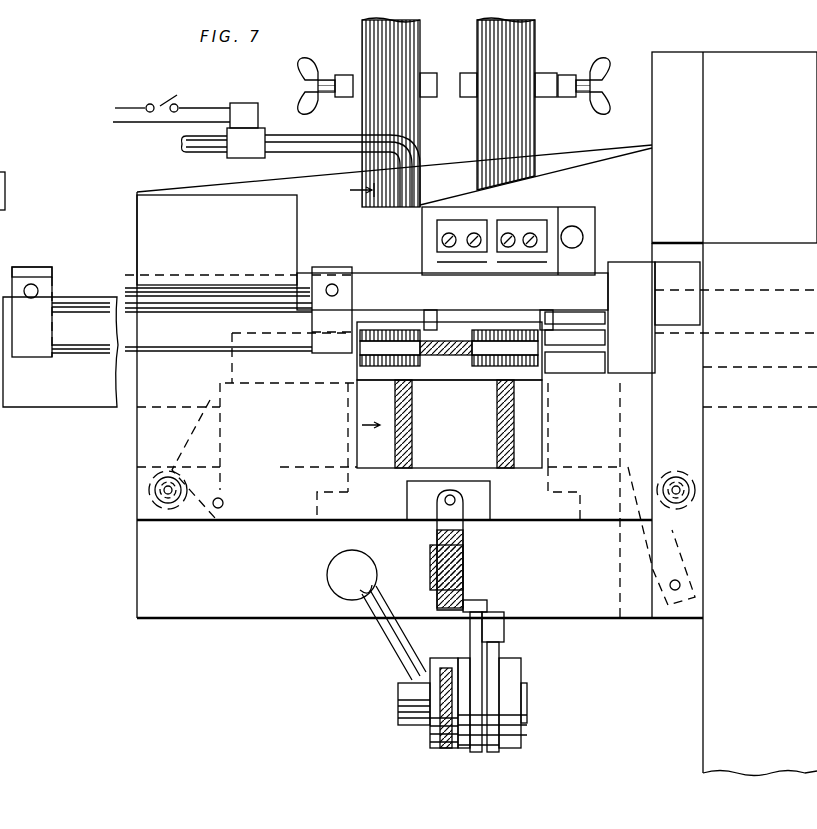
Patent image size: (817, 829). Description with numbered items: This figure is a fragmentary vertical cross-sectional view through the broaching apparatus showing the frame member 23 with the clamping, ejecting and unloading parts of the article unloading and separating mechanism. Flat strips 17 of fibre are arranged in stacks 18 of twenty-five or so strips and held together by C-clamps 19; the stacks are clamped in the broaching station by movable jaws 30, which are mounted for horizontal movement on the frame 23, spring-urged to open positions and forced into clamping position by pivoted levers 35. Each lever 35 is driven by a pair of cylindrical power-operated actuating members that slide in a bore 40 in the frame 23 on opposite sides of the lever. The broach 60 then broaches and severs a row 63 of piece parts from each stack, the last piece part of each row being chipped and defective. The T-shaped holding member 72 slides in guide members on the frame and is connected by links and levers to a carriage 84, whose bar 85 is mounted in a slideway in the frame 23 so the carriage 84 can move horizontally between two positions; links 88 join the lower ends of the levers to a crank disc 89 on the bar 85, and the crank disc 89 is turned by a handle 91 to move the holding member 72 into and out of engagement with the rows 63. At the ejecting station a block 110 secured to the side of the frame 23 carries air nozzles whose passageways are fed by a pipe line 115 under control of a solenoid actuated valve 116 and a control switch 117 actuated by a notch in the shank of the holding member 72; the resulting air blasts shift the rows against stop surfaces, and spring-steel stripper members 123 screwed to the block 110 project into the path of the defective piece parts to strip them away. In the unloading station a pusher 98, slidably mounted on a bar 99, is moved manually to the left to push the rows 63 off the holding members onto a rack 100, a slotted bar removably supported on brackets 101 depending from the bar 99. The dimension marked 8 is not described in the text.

The gap dimension 8 is at (365, 304).
The flat strips 17 is at (490, 50).
The stacks 18 is at (362, 42).
The C-clamps 19 is at (345, 76).
The frame member 23 is at (606, 172).
The movable jaws 30 is at (220, 397).
The levers 35 is at (140, 438).
The bore 40 is at (149, 491).
The broach 60 is at (66, 400).
The rows of piece parts 63 is at (370, 364).
The holding member 72 is at (462, 360).
The carriage 84 is at (534, 659).
The bar 85 is at (432, 558).
The links 88 is at (445, 752).
The crank disc 89 is at (428, 738).
The handle 91 is at (330, 580).
The pusher 98 is at (616, 366).
The bar 99 is at (598, 278).
The rack 100 is at (196, 350).
The brackets 101 is at (40, 350).
The block 110 is at (300, 242).
The pipe line 115 is at (420, 180).
The solenoid actuated valve 116 is at (238, 150).
The control switch 117 is at (168, 104).
The stripper members 123 is at (432, 312).